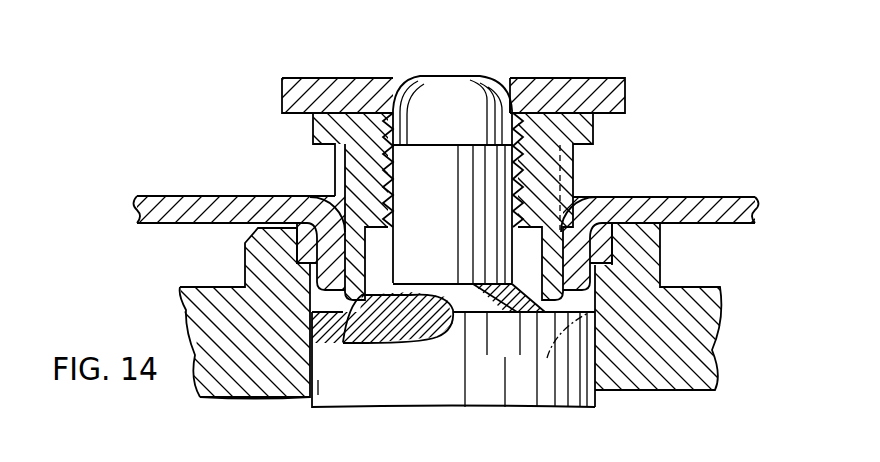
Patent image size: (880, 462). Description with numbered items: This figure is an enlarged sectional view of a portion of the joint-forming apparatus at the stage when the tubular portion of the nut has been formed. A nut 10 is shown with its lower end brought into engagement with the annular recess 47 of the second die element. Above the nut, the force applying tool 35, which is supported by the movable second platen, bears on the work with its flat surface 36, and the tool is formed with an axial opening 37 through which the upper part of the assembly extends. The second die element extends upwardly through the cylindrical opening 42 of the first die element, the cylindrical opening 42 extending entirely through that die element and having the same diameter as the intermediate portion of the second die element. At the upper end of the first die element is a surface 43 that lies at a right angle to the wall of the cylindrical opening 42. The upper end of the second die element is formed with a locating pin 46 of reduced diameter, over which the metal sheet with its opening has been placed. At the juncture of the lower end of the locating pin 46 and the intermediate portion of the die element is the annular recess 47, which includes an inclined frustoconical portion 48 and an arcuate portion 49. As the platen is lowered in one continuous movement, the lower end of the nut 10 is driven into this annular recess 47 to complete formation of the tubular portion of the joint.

The nut 10 is at (306, 137).
The force applying tool 35 is at (638, 91).
The flat surface 36 is at (618, 114).
The axial opening 37 is at (515, 107).
The cylindrical opening 42 is at (481, 398).
The surface 43 is at (632, 240).
The locating pin 46 is at (469, 194).
The annular recess 47 is at (454, 359).
The inclined frustoconical portion 48 is at (520, 302).
The arcuate portion 49 is at (345, 325).